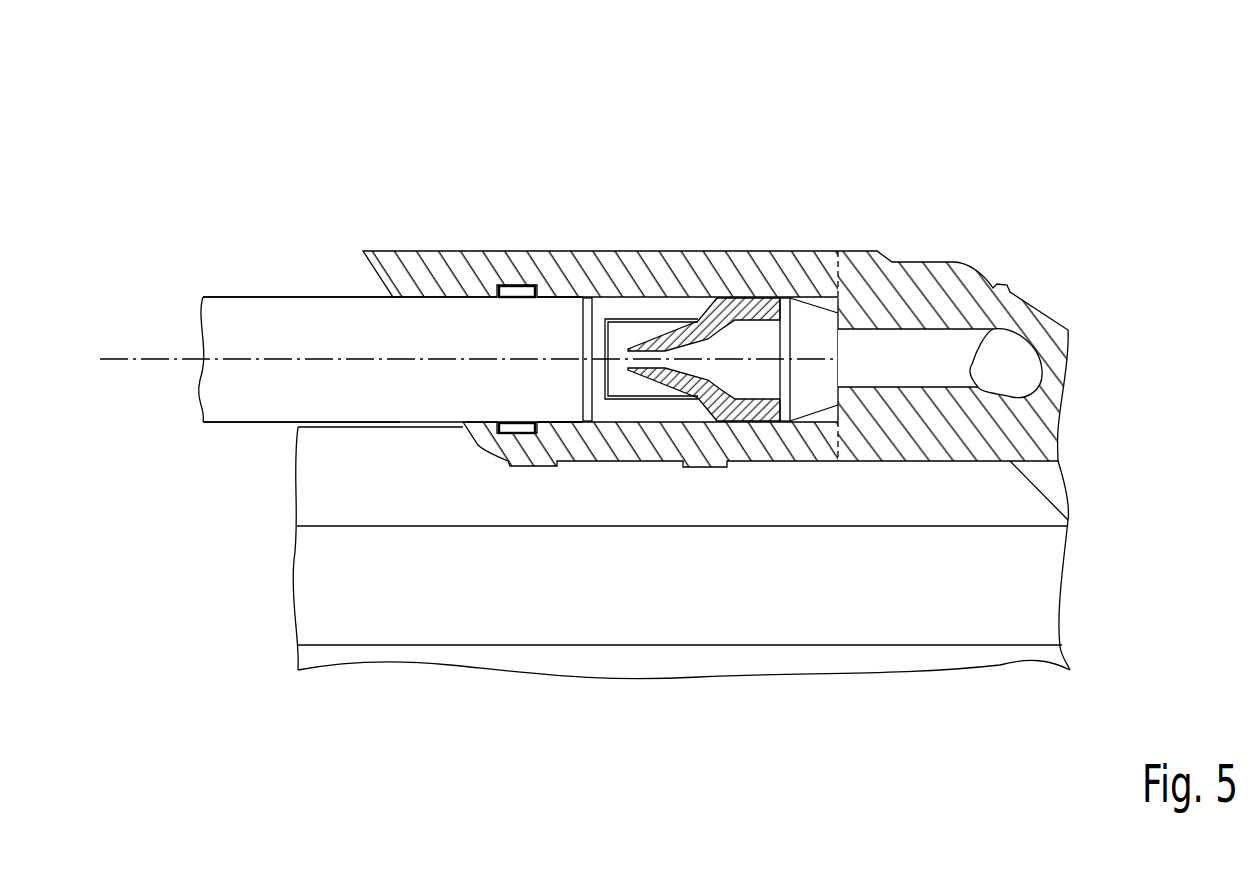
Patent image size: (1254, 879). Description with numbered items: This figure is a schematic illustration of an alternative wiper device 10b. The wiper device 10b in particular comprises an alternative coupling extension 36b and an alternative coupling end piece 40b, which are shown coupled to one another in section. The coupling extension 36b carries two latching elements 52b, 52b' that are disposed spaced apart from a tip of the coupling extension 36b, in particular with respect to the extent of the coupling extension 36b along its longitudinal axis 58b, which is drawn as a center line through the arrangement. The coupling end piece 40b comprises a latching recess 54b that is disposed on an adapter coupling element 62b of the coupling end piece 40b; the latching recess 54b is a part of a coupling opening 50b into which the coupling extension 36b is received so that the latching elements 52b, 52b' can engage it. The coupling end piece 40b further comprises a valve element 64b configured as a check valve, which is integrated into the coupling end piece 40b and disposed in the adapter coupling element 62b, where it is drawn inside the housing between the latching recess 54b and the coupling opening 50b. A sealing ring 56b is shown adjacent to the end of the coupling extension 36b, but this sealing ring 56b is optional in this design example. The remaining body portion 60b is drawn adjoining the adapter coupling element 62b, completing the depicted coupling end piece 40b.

The wiper device 10b is at (941, 128).
The coupling extension 36b is at (319, 318).
The longitudinal axis 58b is at (251, 316).
The adapter coupling element 62b is at (672, 276).
The latching element 52b' is at (498, 242).
The latching element 52b is at (498, 582).
The latching recess 54b is at (534, 434).
The sealing ring 56b is at (587, 300).
The valve element 64b is at (742, 296).
The coupling opening 50b is at (805, 320).
The coupling end piece 40b is at (835, 233).
The connector body 60b is at (947, 282).